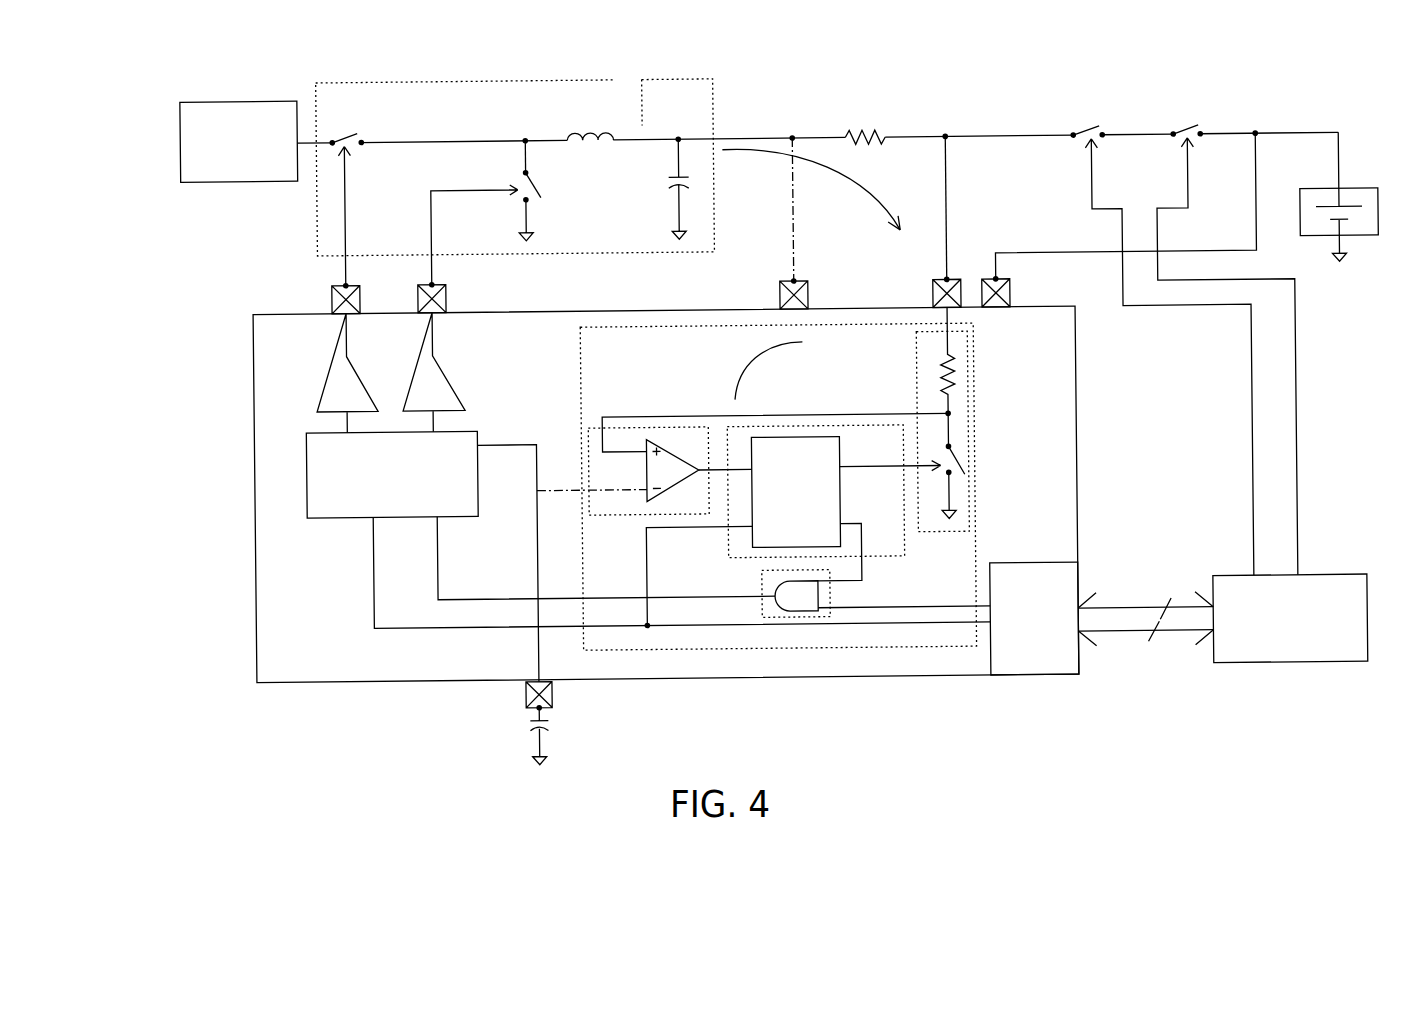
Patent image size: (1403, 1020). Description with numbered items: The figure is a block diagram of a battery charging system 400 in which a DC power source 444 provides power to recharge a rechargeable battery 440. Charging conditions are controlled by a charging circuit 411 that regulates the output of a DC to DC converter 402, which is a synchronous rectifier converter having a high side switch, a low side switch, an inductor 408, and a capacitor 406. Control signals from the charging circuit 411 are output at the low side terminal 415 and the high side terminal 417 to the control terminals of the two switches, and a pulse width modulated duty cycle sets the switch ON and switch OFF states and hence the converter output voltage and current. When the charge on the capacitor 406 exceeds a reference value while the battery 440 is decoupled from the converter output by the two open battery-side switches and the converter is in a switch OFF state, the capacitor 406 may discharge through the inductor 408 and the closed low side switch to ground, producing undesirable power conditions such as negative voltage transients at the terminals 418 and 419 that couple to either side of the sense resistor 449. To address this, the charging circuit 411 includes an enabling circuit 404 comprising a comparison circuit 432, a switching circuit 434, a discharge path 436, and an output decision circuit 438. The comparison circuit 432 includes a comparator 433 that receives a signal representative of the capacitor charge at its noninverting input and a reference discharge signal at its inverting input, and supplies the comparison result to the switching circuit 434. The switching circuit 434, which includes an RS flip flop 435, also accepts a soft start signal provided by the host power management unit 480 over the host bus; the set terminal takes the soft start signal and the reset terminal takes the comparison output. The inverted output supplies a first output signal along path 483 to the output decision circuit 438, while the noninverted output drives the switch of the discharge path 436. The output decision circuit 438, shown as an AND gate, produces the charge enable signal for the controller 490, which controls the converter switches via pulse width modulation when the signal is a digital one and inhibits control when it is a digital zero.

The battery charging system 400 is at (295, 34).
The DC to DC converter 402 is at (490, 77).
The DC power source 444 is at (265, 83).
The inductor 408 is at (593, 127).
The capacitor 406 is at (677, 172).
The sense resistor 449 is at (882, 132).
The rechargeable battery 440 is at (1326, 195).
The charging circuit 411 is at (254, 336).
The high side terminal 417 is at (332, 299).
The low side terminal 415 is at (470, 300).
The terminal 418 is at (779, 300).
The terminal 419 is at (933, 302).
The enabling circuit 404 is at (974, 361).
The discharge path 436 is at (917, 372).
The comparison circuit 432 is at (597, 515).
The comparator 433 is at (697, 479).
The RS flip flop 435 is at (871, 503).
The switching circuit 434 is at (905, 540).
The output decision circuit 438 is at (760, 588).
The path 483 is at (860, 560).
The controller 490 is at (353, 516).
The host power management unit 480 is at (1346, 568).